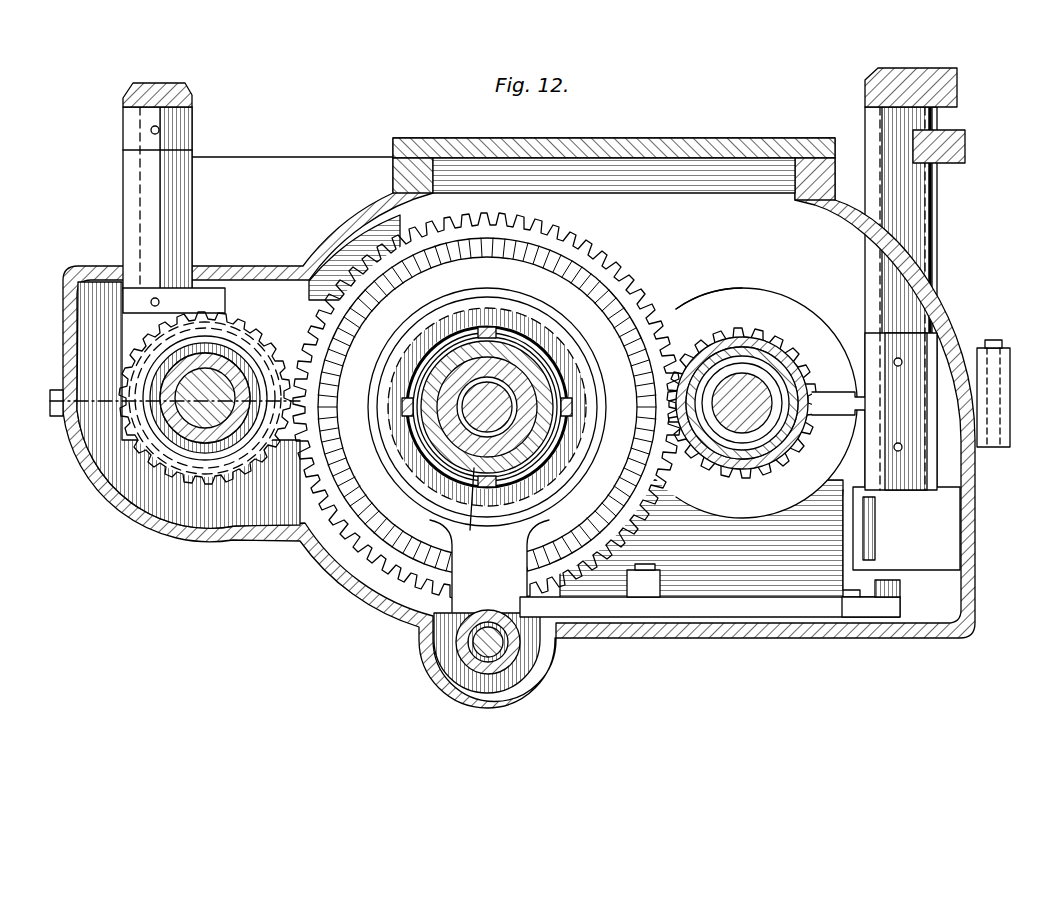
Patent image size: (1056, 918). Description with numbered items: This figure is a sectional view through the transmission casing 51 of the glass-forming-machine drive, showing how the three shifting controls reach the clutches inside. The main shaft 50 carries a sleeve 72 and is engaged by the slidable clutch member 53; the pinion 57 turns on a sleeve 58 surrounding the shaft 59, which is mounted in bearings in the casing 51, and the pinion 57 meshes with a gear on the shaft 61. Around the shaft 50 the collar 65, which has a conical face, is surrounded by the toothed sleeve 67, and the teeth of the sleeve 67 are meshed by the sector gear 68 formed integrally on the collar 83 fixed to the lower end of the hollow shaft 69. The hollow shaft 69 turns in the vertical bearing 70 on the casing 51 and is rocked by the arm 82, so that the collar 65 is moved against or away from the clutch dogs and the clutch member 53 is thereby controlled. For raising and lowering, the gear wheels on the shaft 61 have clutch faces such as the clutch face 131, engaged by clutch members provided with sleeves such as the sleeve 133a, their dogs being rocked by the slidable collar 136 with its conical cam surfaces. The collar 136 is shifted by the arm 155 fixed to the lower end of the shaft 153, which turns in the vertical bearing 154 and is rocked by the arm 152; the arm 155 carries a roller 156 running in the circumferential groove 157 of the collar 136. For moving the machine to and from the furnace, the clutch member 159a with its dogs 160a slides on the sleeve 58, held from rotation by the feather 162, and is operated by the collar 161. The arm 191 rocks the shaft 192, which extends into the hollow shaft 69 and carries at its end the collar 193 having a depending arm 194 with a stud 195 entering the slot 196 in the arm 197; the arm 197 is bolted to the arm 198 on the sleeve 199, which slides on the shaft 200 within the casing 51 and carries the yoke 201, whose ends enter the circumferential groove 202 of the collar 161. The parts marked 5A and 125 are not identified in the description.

The casing portion 5A is at (710, 320).
The main shaft 50 is at (770, 375).
The casing 51 is at (965, 535).
The slidable clutch member 53 is at (784, 525).
The pinion 57 is at (600, 253).
The sleeve 58 is at (438, 335).
The shaft 59 is at (470, 332).
The shaft 61 is at (190, 440).
The collar 65 is at (748, 372).
The sleeve 67 is at (735, 360).
The sector gear 68 is at (742, 403).
The hollow shaft 69 is at (932, 207).
The vertical bearing 70 is at (868, 185).
The sleeve 72 is at (835, 393).
The arm 82 is at (948, 152).
The collar 83 is at (870, 345).
The bracket 125 is at (950, 578).
The clutch face 131 is at (218, 490).
The sleeve 133a is at (170, 447).
The slidable collar 136 is at (130, 430).
The arm 152 is at (190, 78).
The shaft 153 is at (150, 131).
The vertical bearing 154 is at (183, 200).
The arm 155 is at (225, 300).
The roller 156 is at (262, 343).
The circumferential groove 157 is at (148, 320).
The clutch member 159a is at (487, 449).
The dogs 160a is at (500, 333).
The collar 161 is at (590, 345).
The feather 162 is at (440, 393).
The arm 191 is at (924, 74).
The shaft 192 is at (935, 243).
The collar 193 is at (977, 445).
The depending arm 194 is at (845, 548).
The stud 195 is at (898, 608).
The slot 196 is at (845, 618).
The arm 197 is at (705, 605).
The arm 198 is at (580, 615).
The sleeve 199 is at (458, 670).
The shaft 200 is at (475, 645).
The yoke 201 is at (465, 558).
The circumferential groove 202 is at (507, 325).